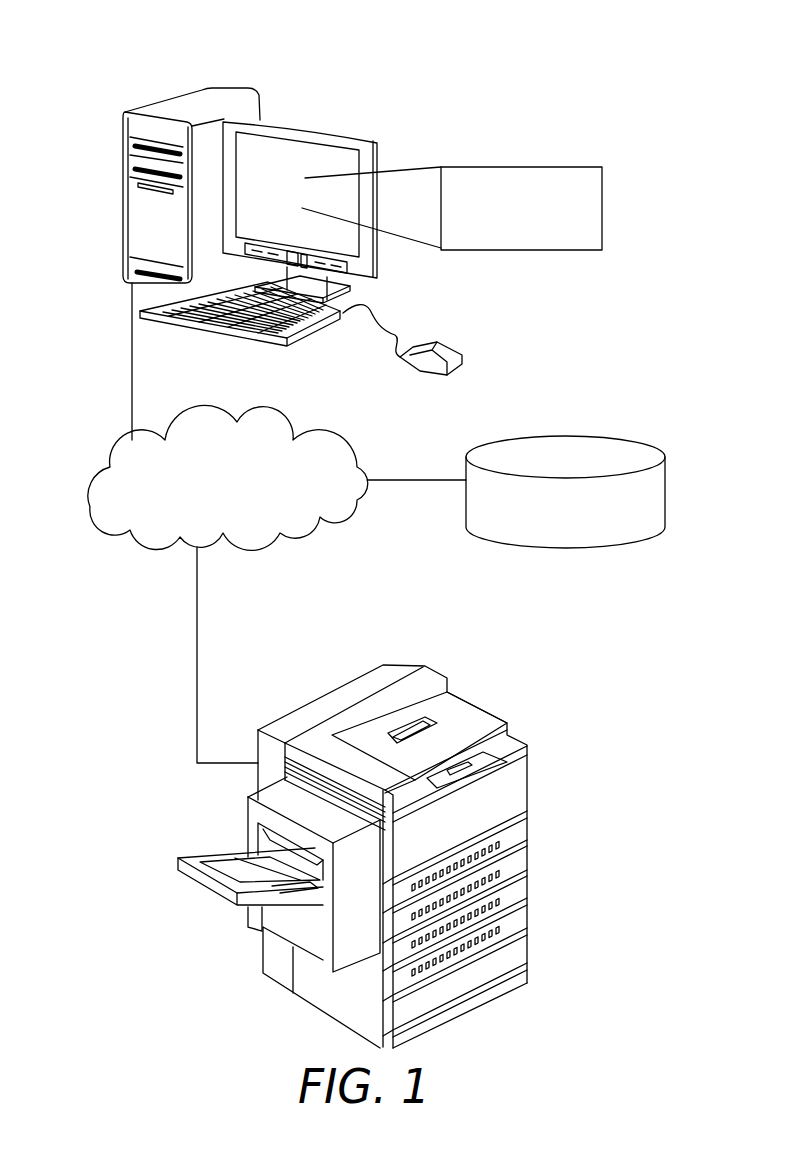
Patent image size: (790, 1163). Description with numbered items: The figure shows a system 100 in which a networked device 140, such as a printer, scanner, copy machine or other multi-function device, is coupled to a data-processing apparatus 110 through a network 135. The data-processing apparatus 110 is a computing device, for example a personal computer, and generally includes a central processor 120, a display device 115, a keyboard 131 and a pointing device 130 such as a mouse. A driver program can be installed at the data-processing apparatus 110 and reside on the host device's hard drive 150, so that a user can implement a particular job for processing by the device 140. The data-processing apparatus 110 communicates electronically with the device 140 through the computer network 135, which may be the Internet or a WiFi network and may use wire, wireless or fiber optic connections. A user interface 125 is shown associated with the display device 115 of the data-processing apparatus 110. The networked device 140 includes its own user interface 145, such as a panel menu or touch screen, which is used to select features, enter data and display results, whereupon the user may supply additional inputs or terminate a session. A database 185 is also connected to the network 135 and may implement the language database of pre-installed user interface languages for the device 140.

The system 100 is at (467, 65).
The data-processing apparatus 110 is at (323, 160).
The display device 115 is at (305, 122).
The central processor 120 is at (125, 272).
The user interface 125 is at (545, 166).
The pointing device 130 is at (440, 350).
The keyboard 131 is at (217, 325).
The network 135 is at (260, 417).
The networked device 140 is at (433, 672).
The user interface 145 is at (478, 718).
The hard drive 150 is at (160, 100).
The database 185 is at (607, 435).